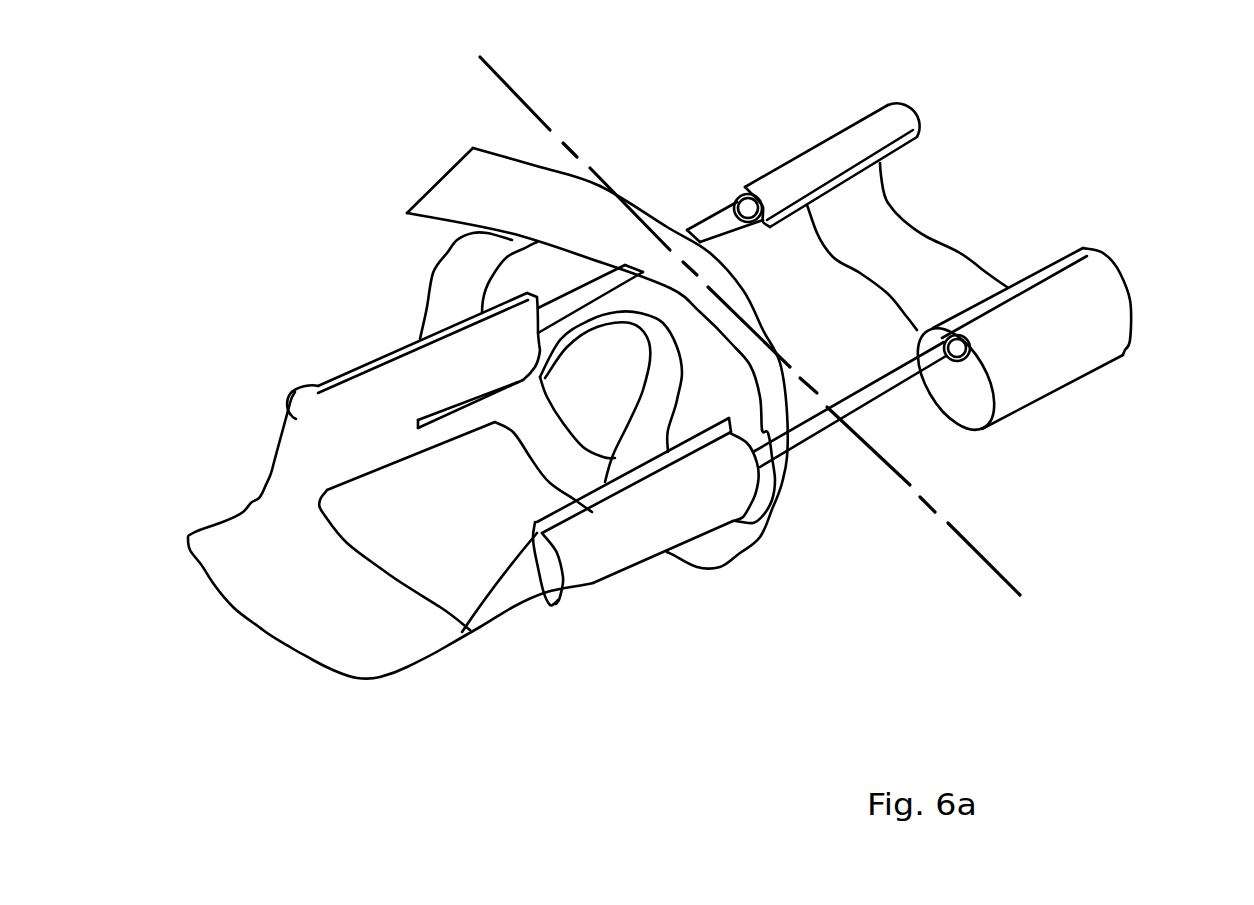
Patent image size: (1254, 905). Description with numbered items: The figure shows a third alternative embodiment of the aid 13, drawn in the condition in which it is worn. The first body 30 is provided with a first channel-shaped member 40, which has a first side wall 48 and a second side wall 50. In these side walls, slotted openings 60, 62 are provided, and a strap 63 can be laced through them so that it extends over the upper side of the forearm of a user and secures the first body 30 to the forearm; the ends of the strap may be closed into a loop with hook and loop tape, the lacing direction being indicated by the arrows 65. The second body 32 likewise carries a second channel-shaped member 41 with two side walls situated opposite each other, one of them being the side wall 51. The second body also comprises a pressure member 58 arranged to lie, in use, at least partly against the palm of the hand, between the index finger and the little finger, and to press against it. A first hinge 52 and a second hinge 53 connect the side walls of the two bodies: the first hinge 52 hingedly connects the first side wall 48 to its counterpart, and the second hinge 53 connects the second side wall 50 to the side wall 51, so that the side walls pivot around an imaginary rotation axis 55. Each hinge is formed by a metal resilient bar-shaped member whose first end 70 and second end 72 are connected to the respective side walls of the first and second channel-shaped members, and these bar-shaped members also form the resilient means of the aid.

The spring clip assembly 13 is at (1140, 442).
The first body 30 is at (483, 630).
The second body 32 is at (958, 437).
The first channel-shaped member 40 is at (265, 640).
The second channel-shaped member 41 is at (983, 267).
The first side wall 48 is at (676, 575).
The second side wall 50 is at (353, 365).
The side wall 51 is at (903, 105).
The first hinge 52 is at (803, 445).
The second hinge 53 is at (703, 217).
The imaginary rotation axis 55 is at (1010, 578).
The pressure member 58 is at (935, 235).
The slotted opening 60 is at (592, 588).
The slotted opening 62 is at (332, 442).
The strap 63 is at (522, 158).
The direction arrows 65 is at (418, 181).
The first end 70 is at (570, 320).
The second end 72 is at (743, 193).